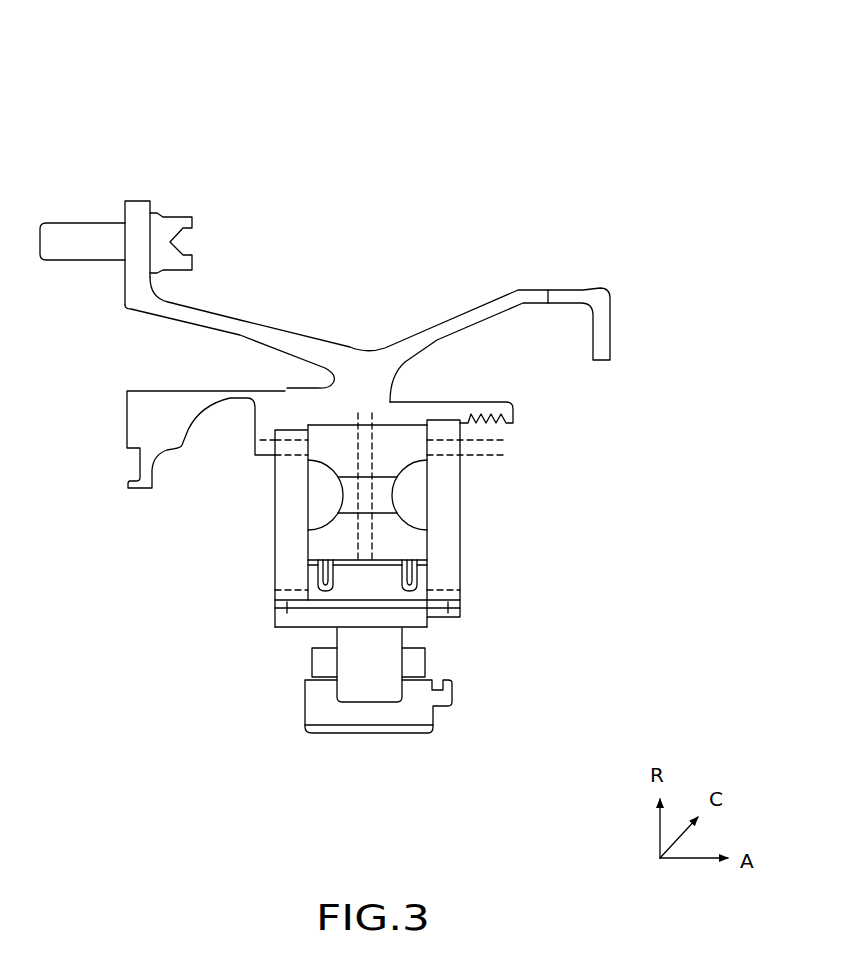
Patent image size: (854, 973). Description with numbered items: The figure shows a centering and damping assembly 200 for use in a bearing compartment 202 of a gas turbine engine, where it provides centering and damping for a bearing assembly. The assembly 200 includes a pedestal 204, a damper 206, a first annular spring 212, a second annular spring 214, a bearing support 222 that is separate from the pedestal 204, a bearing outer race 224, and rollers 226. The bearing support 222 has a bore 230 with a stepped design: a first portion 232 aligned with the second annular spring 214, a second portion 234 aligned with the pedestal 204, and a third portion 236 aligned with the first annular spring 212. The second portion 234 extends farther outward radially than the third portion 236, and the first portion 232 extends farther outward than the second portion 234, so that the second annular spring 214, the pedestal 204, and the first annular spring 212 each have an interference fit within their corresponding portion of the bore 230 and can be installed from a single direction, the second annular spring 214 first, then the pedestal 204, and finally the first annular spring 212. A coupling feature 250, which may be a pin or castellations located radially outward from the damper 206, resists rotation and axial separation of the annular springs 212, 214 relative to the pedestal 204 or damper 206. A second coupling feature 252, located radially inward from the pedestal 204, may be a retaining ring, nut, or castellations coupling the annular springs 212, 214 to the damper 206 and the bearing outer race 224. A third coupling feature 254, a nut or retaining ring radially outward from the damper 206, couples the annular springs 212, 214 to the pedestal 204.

The assembly 200 is at (160, 102).
The bearing compartment 202 is at (264, 72).
The pedestal 204 is at (410, 453).
The damper 206 is at (397, 600).
The first annular spring 212 is at (290, 523).
The second annular spring 214 is at (445, 518).
The bearing support 222 is at (470, 349).
The bearing outer race 224 is at (422, 622).
The rollers 226 is at (367, 690).
The bore 230 is at (348, 406).
The first portion 232 is at (433, 413).
The second portion 234 is at (397, 417).
The third portion 236 is at (287, 418).
The coupling feature 250 is at (270, 435).
The second coupling feature 252 is at (288, 622).
The third coupling feature 254 is at (518, 441).